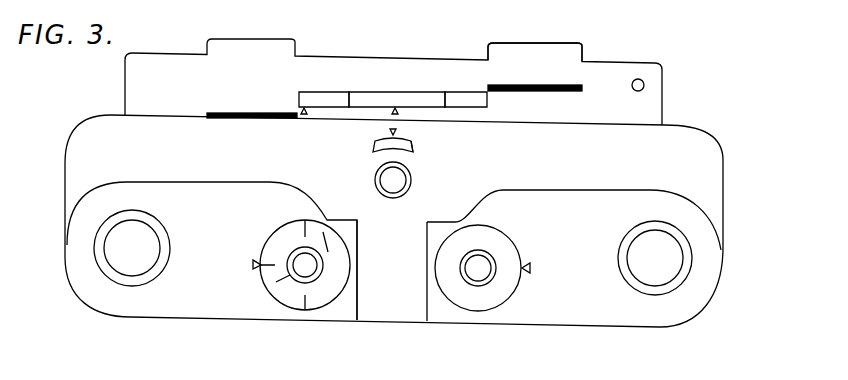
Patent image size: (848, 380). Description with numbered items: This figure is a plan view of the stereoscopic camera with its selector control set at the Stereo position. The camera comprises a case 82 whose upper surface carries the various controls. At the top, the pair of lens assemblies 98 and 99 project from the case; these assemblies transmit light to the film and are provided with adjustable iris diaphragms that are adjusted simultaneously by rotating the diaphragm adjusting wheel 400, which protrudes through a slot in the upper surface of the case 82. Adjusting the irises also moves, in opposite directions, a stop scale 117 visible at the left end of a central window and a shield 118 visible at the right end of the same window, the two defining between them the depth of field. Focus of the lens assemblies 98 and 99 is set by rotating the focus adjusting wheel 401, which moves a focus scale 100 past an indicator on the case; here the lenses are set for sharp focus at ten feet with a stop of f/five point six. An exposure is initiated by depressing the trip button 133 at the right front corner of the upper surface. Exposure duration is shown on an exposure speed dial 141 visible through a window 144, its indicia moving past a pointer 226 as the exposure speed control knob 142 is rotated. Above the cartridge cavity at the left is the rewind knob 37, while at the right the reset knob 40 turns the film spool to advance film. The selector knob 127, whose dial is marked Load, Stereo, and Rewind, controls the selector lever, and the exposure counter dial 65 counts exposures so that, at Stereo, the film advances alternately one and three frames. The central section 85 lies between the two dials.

The case 82 is at (712, 173).
The lens assembly 98 is at (289, 41).
The lens assembly 99 is at (536, 43).
The stop scale 117 is at (334, 92).
The focus scale 100 is at (378, 92).
The shield 118 is at (458, 99).
The diaphragm adjusting wheel 400 is at (226, 113).
The focus adjusting wheel 401 is at (540, 81).
The trip button 133 is at (633, 89).
The pointer 226 is at (397, 131).
The exposure speed dial 141 is at (375, 146).
The window 144 is at (413, 150).
The exposure speed control knob 142 is at (412, 183).
The rewind knob 37 is at (162, 232).
The reset knob 40 is at (626, 238).
The selector knob 127 is at (273, 278).
The exposure counter dial 65 is at (510, 251).
The central section 85 is at (405, 320).